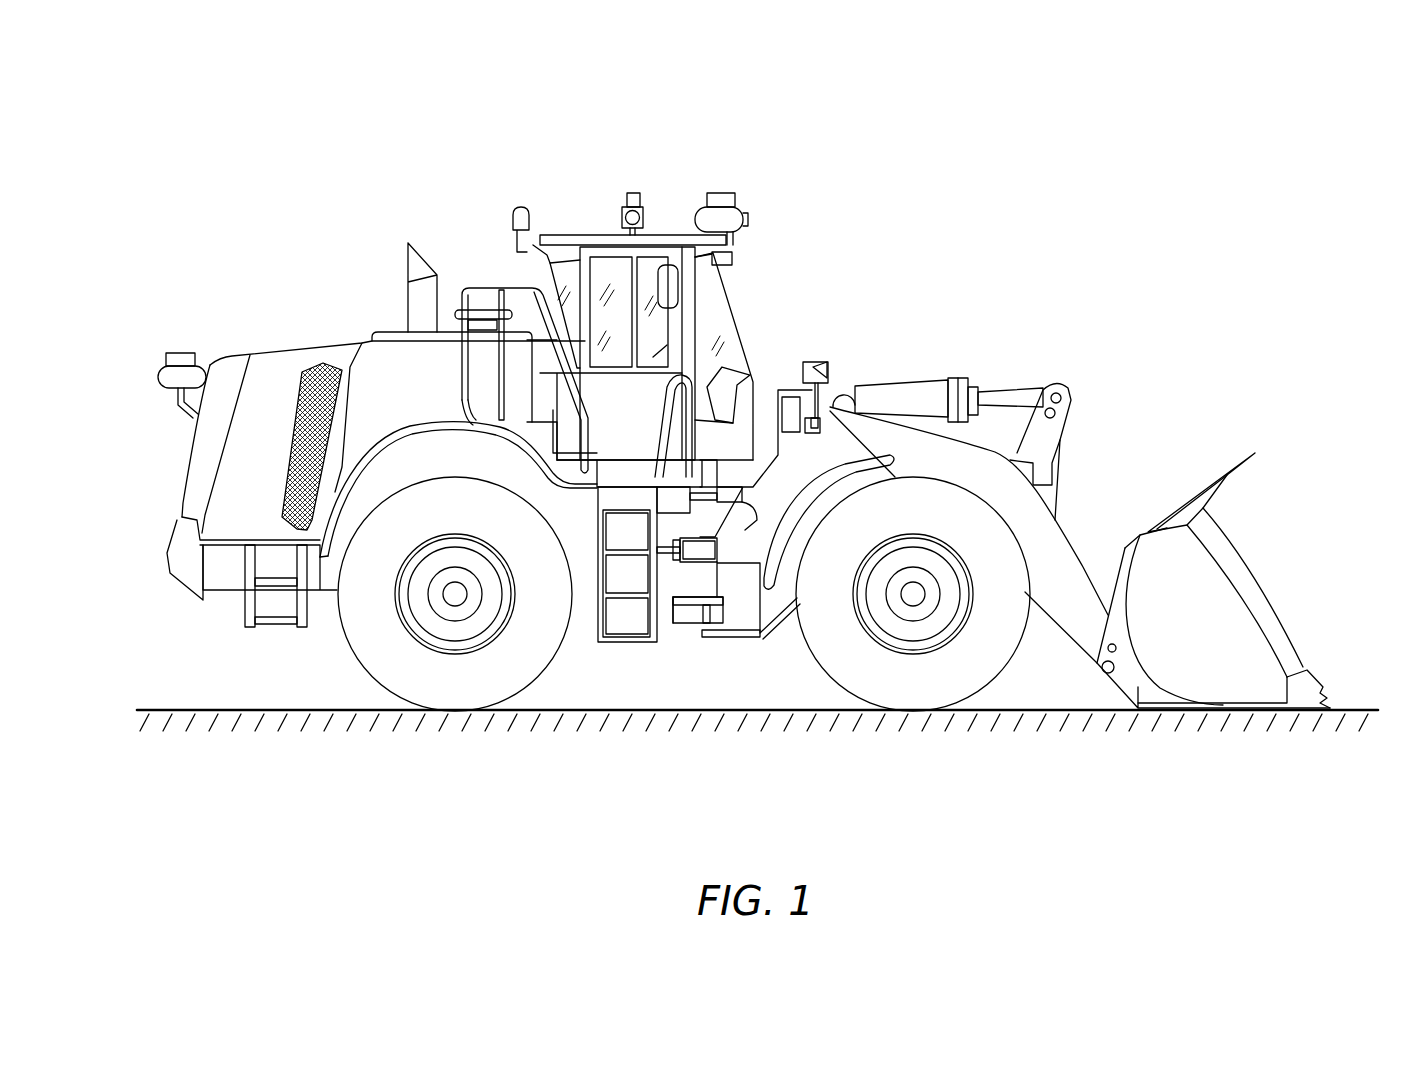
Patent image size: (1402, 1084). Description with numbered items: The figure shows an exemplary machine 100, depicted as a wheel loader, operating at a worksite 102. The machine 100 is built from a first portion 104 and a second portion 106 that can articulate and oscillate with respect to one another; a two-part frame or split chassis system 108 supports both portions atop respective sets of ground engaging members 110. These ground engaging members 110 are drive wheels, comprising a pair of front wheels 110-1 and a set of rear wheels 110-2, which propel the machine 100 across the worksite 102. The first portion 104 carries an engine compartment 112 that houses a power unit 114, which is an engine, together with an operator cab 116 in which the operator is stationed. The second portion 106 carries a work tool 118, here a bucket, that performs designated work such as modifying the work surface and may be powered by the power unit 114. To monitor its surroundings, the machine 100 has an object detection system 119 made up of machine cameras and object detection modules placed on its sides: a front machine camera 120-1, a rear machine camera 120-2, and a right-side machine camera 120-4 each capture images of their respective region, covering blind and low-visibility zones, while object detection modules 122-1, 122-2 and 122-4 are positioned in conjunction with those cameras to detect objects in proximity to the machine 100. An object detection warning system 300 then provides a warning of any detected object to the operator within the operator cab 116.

The machine 100 is at (1223, 132).
The worksite 102 is at (178, 709).
The first portion 104 is at (171, 477).
The second portion 106 is at (919, 340).
The split chassis system 108 is at (666, 656).
The ground engaging members 110 is at (326, 656).
The front wheels 110-1 is at (1011, 664).
The rear wheels 110-2 is at (548, 661).
The engine compartment 112 is at (284, 346).
The power unit 114 is at (282, 428).
The operator cab 116 is at (672, 226).
The work tool 118 is at (1289, 516).
The object detection system 119 is at (265, 515).
The machine camera 120-1 is at (738, 241).
The machine camera 120-2 is at (178, 402).
The machine camera 120-4 is at (606, 225).
The object detection module 122-1 is at (732, 192).
The object detection module 122-2 is at (175, 352).
The object detection module 122-4 is at (620, 192).
The object detection warning system 300 is at (430, 396).